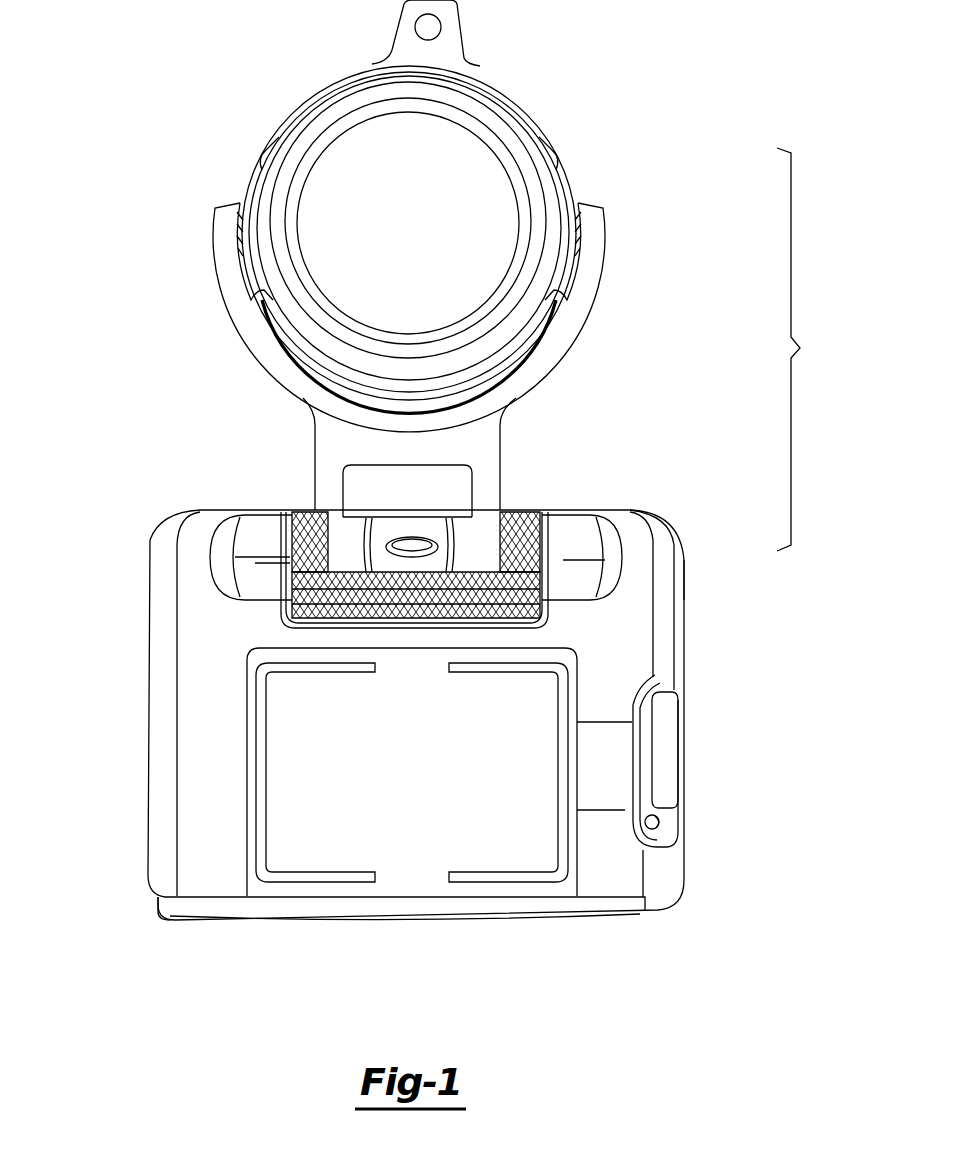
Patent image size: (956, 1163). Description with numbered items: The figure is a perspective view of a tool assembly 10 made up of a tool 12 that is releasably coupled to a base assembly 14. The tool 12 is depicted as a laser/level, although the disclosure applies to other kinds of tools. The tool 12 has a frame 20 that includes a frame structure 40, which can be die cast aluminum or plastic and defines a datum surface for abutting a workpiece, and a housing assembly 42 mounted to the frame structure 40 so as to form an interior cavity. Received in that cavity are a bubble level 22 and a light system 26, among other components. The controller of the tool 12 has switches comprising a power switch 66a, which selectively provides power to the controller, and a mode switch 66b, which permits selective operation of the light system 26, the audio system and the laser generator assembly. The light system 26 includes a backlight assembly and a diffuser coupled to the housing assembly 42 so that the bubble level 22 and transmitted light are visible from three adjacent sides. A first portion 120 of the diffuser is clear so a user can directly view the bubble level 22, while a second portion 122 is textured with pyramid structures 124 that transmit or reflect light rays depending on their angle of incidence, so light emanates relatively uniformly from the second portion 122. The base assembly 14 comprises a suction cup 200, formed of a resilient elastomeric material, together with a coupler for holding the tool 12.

The tool assembly 10 is at (803, 349).
The tool 12 is at (693, 554).
The base assembly 14 is at (630, 216).
The frame 20 is at (177, 662).
The bubble level 22 is at (477, 545).
The light system 26 is at (280, 618).
The frame structure 40 is at (682, 892).
The housing assembly 42 is at (202, 787).
The power switch 66a is at (697, 587).
The mode switch 66b is at (693, 727).
The first portion of the diffuser 120 is at (347, 545).
The second portion of the diffuser 122 is at (305, 530).
The pyramid structures 124 is at (518, 530).
The suction cup 200 is at (513, 97).